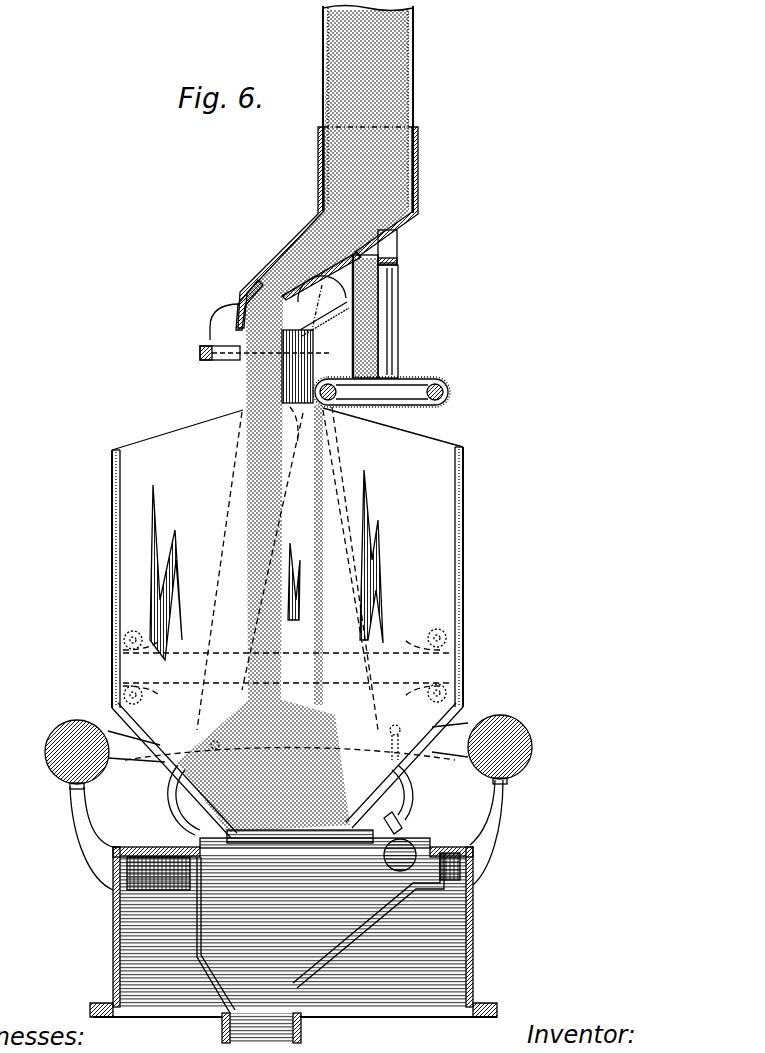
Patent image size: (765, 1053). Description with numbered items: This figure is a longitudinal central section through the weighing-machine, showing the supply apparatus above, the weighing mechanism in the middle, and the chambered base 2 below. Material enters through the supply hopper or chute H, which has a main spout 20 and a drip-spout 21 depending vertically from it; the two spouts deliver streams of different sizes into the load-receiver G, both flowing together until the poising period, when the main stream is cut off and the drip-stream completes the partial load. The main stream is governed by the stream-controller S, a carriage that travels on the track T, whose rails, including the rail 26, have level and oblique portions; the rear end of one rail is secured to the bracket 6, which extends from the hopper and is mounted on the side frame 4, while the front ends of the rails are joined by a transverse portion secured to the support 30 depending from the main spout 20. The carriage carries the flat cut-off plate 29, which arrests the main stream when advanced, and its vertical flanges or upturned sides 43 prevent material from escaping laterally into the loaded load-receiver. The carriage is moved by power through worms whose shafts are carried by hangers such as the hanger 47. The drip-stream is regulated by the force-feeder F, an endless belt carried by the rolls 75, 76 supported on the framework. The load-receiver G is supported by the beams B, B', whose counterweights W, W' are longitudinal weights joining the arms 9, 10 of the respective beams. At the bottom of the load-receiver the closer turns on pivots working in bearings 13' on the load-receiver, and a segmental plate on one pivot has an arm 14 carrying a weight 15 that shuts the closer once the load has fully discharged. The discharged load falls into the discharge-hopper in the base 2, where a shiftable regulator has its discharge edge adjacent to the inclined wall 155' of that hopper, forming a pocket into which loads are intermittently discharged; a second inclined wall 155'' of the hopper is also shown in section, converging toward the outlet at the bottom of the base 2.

The supply hopper or chute H is at (320, 165).
The side frame 4 is at (245, 398).
The cut-off plate 29 is at (280, 260).
The bracket 6 is at (398, 243).
The main spout 20 is at (256, 284).
The vertical flanges or upturned sides 43 is at (322, 302).
The stream-controller S is at (325, 308).
The drip-spout 21 is at (378, 336).
The support 30 is at (209, 327).
The rail 26 is at (338, 325).
The track T is at (200, 353).
The hanger 47 is at (398, 345).
The force-feeder F is at (381, 381).
The roll 76 is at (444, 392).
The roll 75 is at (340, 400).
The load-receiver G is at (287, 558).
The counterweight W is at (74, 742).
The counterweight W' is at (513, 744).
The supporting beam B is at (174, 770).
The arm 9 is at (127, 748).
The supporting beam B' is at (416, 761).
The arm 10 is at (452, 750).
The bearing 13' is at (414, 792).
The arm 14 is at (398, 822).
The weight 15 is at (410, 840).
The chambered base 2 is at (476, 940).
The inclined wall 155' is at (368, 920).
The funnel wall 155'' is at (231, 935).